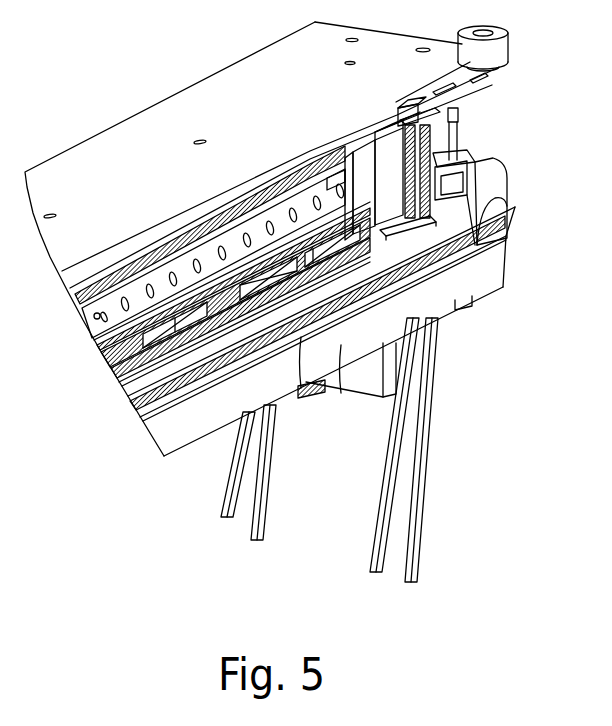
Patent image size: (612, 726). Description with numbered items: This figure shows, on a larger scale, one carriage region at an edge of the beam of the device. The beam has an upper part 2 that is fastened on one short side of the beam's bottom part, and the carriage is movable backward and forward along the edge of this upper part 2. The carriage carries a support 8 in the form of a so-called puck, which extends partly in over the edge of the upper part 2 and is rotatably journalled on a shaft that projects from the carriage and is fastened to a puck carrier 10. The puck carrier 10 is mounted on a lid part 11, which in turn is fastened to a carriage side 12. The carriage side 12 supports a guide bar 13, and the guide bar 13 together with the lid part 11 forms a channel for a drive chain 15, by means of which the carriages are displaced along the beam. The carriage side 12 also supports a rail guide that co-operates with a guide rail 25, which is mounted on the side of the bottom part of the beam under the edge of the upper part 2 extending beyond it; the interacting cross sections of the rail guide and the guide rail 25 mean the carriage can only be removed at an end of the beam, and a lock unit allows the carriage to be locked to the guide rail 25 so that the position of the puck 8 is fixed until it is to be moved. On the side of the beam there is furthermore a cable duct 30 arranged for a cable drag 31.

The upper part 2 is at (158, 130).
The support (puck) 8 is at (494, 50).
The puck carrier 10 is at (478, 80).
The lid part 11 is at (461, 110).
The carriage side 12 is at (390, 188).
The guide bar 13 is at (300, 167).
The drive chain 15 is at (263, 457).
The guide rail 25 is at (187, 273).
The cable duct 30 is at (488, 265).
The cable drag 31 is at (489, 180).